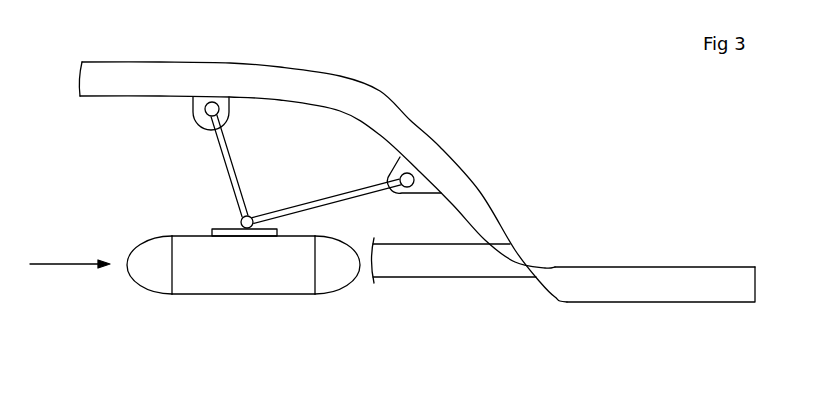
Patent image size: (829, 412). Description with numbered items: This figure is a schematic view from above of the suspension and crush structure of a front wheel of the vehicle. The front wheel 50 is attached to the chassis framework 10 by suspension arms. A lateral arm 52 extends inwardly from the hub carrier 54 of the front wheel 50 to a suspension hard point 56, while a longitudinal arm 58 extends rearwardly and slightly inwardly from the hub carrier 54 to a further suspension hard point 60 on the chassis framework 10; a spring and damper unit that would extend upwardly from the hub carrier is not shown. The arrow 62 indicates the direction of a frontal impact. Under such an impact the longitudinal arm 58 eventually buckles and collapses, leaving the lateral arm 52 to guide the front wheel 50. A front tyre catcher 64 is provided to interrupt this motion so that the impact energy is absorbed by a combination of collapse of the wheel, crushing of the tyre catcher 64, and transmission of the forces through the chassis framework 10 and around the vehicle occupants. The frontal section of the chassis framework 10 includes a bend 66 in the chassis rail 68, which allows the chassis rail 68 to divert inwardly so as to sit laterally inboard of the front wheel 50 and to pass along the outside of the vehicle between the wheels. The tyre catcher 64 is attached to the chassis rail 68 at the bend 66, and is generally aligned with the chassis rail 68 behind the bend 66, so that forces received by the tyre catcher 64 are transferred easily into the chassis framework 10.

The chassis framework 10 is at (500, 206).
The front wheel 50 is at (273, 294).
The lateral arm 52 is at (223, 160).
The hub carrier 54 is at (220, 228).
The suspension hard point 56 is at (198, 122).
The longitudinal arm 58 is at (325, 197).
The further suspension hard point 60 is at (415, 175).
The arrow 62 is at (70, 255).
The front tyre catcher 64 is at (468, 278).
The bend 66 is at (543, 274).
The chassis rail 68 is at (647, 303).